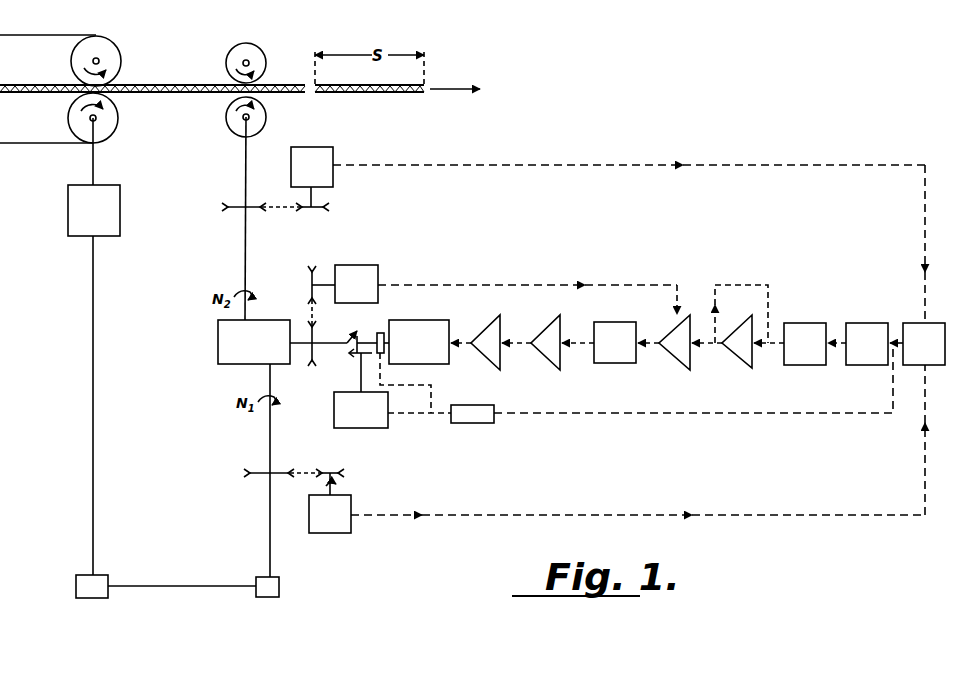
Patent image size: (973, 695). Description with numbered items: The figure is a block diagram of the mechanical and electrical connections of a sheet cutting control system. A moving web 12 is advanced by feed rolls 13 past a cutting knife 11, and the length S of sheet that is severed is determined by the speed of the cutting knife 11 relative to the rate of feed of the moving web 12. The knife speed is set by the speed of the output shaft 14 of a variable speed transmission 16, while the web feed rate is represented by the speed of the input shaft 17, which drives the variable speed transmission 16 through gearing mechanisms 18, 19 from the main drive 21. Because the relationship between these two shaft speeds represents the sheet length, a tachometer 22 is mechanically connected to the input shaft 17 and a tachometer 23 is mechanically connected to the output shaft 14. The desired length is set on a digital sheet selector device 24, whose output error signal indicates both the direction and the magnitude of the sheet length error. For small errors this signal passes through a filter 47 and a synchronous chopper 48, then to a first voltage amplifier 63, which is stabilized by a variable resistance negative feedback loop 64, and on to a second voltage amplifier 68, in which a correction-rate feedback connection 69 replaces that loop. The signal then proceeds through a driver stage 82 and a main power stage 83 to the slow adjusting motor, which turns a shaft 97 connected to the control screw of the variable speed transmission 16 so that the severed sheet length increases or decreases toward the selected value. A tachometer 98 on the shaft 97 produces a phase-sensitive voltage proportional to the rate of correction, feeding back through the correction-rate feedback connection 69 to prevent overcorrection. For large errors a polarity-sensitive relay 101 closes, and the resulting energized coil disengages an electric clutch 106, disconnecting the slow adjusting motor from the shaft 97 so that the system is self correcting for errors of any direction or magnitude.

The cutting knife 11 is at (264, 80).
The moving web 12 is at (163, 86).
The feed rolls 13 is at (124, 78).
The output shaft 14 is at (248, 249).
The variable speed transmission 16 is at (254, 342).
The input shaft 17 is at (270, 441).
The gearing mechanism 18 is at (98, 600).
The gearing mechanism 19 is at (268, 600).
The main drive 21 is at (258, 274).
The tachometer 22 is at (348, 443).
The tachometer 23 is at (429, 255).
The digital sheet selector device 24 is at (924, 344).
The filter 47 is at (867, 344).
The synchronous chopper 48 is at (805, 344).
The first voltage amplifier 63 is at (733, 358).
The negative feedback loop 64 is at (738, 285).
The second voltage amplifier 68 is at (672, 358).
The correction-rate feedback connection 69 is at (526, 268).
The driver stage 82 is at (543, 358).
The main power stage 83 is at (482, 358).
The shaft 97 is at (340, 333).
The tachometer 98 is at (345, 284).
The polarity-sensitive relay 101 is at (472, 414).
The electric clutch 106 is at (380, 333).